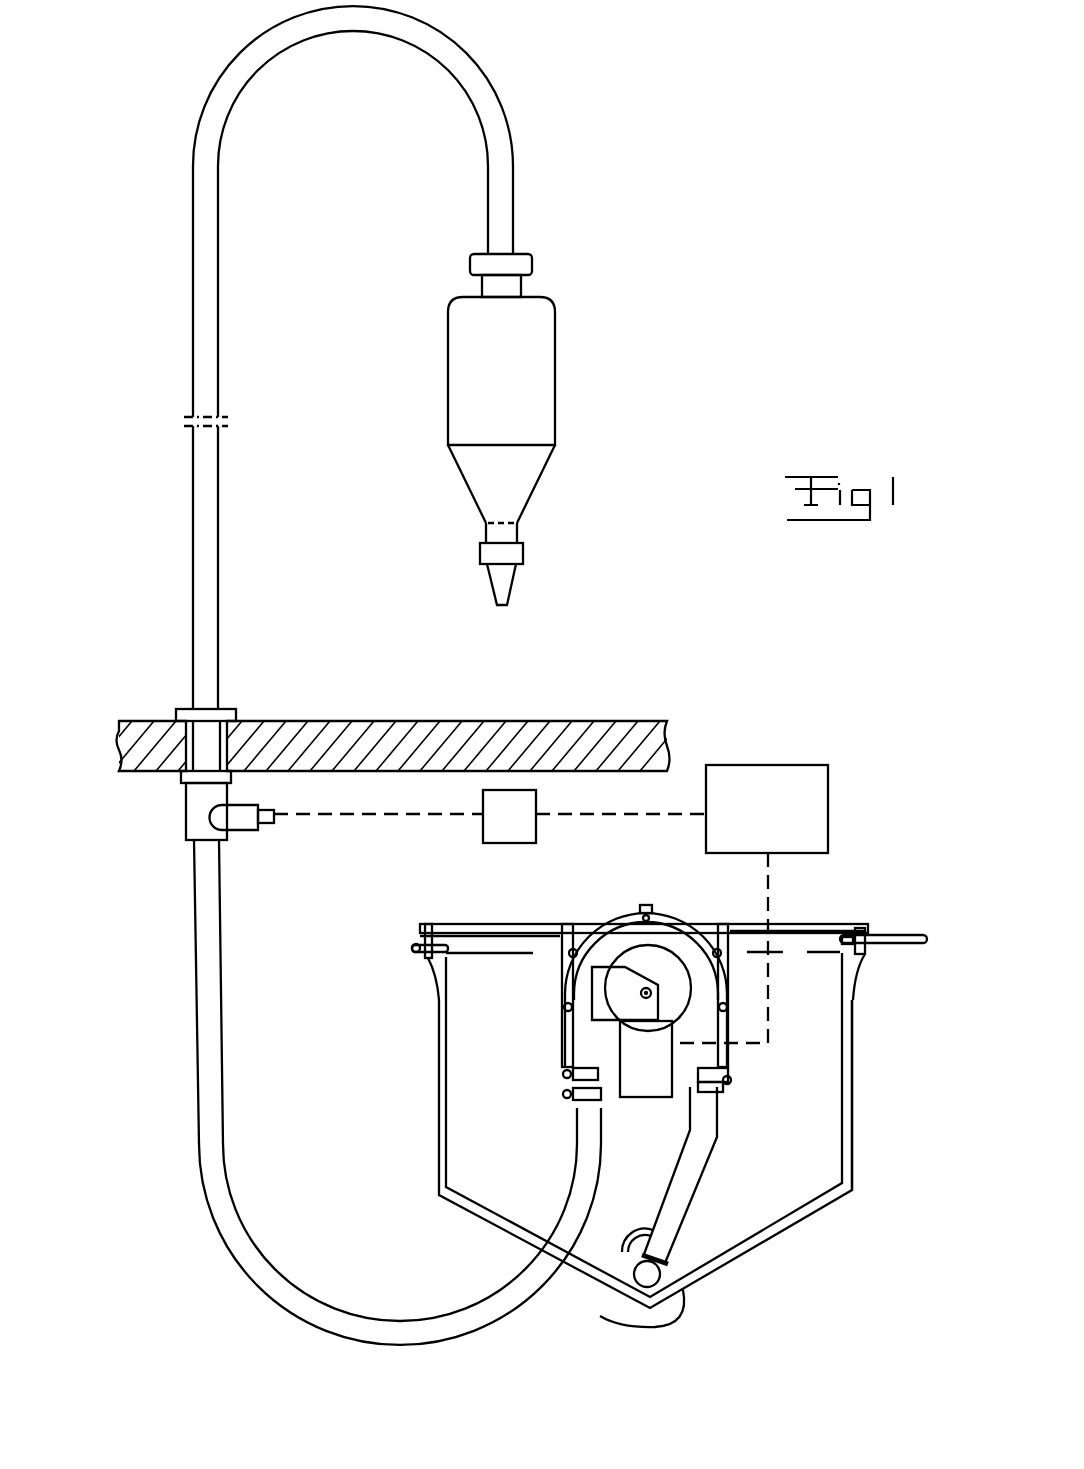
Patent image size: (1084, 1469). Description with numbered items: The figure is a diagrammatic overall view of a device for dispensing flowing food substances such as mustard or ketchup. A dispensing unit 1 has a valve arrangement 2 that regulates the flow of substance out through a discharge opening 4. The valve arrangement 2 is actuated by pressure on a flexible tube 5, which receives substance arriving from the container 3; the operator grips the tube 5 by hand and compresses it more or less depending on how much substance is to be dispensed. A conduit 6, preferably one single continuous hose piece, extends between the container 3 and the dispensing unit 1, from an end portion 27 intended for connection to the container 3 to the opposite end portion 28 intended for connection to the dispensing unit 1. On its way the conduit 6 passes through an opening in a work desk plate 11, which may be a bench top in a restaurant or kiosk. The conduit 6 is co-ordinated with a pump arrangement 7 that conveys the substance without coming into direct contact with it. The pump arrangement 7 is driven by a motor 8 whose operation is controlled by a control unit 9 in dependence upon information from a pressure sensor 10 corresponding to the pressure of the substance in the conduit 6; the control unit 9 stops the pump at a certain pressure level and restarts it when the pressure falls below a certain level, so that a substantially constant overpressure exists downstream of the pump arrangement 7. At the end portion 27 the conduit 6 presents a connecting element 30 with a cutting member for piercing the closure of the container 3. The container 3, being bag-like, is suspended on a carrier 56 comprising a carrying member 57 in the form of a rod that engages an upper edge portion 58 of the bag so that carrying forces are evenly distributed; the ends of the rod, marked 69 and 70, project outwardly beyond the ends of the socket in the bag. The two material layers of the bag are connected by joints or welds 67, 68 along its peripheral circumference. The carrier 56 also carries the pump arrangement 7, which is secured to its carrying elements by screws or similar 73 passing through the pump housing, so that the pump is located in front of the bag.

The dispensing unit 1 is at (598, 379).
The valve arrangement 2 is at (505, 533).
The container 3 is at (467, 1112).
The discharge opening 4 is at (503, 608).
The tube 5 is at (463, 387).
The conduit 6 is at (208, 598).
The pump arrangement 7 is at (665, 940).
The motor 8 is at (635, 1055).
The control unit 9 is at (780, 782).
The pressure sensor 10 is at (270, 832).
The work desk plate 11 is at (401, 730).
The end portion 27 is at (656, 1238).
The end portion 28 is at (503, 240).
The connecting element 30 is at (655, 1273).
The carrier 56 is at (421, 977).
The carrying member 57 is at (893, 932).
The upper edge portion 58 is at (527, 940).
The weld 67 is at (850, 1115).
The weld 68 is at (603, 1283).
The end of the rod 69 is at (432, 940).
The end of the rod 70 is at (910, 950).
The screws 73 is at (565, 975).